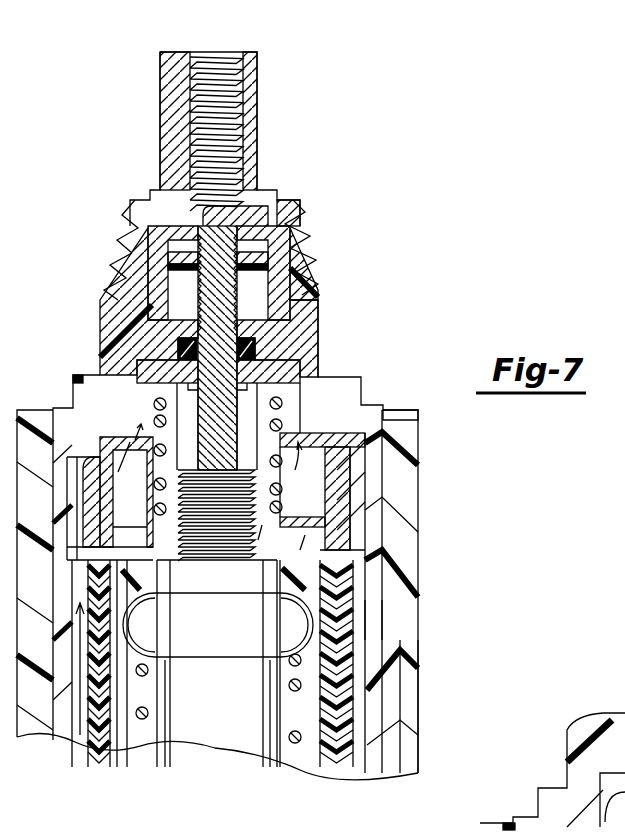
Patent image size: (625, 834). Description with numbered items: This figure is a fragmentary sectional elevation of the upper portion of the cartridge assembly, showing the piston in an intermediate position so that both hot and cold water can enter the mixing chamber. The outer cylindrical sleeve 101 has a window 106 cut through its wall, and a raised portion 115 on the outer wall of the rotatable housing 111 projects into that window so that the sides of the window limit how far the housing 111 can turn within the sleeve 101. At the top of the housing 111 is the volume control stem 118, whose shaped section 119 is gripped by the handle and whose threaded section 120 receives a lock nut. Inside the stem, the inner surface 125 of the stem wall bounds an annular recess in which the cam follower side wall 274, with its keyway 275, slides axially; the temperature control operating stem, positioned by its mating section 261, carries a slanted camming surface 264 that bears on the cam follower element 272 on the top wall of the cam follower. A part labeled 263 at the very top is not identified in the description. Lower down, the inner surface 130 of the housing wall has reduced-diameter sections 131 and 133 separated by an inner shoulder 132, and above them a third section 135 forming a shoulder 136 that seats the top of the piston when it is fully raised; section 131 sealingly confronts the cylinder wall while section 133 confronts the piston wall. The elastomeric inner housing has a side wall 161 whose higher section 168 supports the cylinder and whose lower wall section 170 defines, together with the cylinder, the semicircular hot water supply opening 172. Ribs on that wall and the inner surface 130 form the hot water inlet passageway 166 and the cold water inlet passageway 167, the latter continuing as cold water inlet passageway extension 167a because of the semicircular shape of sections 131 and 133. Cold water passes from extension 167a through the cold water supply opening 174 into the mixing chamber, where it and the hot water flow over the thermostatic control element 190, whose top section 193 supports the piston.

The threaded stem 263 is at (215, 60).
The camming surface 264 is at (240, 204).
The cam follower element 272 is at (286, 199).
The threaded section 120 is at (296, 224).
The keyway 275 is at (270, 251).
The side wall 274 is at (280, 267).
The volume control stem 118 is at (312, 283).
The complementary shaped section 119 is at (302, 333).
The inner surface 125 is at (136, 201).
The mating section 261 is at (135, 240).
The shoulder 136 is at (90, 378).
The section 133 is at (78, 440).
The inner shoulder 132 is at (78, 490).
The section 131 is at (70, 570).
The water supply opening 172 is at (60, 636).
The hot water inlet passageway 166 is at (92, 740).
The thermostatic control element 190 is at (180, 758).
The wall section 170 is at (136, 610).
The third section 135 is at (340, 410).
The cold water supply opening 174 is at (396, 434).
The cold water inlet passageway extension 167a is at (410, 463).
The cylindrical sleeve 101 is at (406, 508).
The higher section 168 is at (352, 535).
The housing 111 is at (372, 563).
The top section 193 is at (356, 585).
The side wall 161 is at (381, 611).
The raised portion 115 is at (386, 673).
The window 106 is at (420, 690).
The cold water inlet passageway 167 is at (366, 741).
The inner surface 130 is at (362, 757).